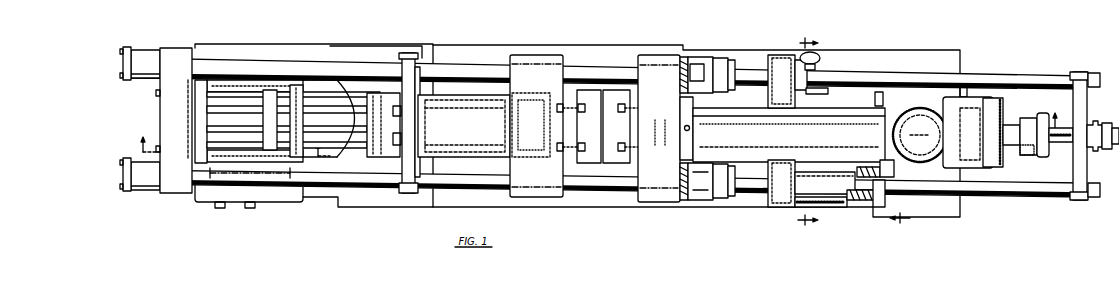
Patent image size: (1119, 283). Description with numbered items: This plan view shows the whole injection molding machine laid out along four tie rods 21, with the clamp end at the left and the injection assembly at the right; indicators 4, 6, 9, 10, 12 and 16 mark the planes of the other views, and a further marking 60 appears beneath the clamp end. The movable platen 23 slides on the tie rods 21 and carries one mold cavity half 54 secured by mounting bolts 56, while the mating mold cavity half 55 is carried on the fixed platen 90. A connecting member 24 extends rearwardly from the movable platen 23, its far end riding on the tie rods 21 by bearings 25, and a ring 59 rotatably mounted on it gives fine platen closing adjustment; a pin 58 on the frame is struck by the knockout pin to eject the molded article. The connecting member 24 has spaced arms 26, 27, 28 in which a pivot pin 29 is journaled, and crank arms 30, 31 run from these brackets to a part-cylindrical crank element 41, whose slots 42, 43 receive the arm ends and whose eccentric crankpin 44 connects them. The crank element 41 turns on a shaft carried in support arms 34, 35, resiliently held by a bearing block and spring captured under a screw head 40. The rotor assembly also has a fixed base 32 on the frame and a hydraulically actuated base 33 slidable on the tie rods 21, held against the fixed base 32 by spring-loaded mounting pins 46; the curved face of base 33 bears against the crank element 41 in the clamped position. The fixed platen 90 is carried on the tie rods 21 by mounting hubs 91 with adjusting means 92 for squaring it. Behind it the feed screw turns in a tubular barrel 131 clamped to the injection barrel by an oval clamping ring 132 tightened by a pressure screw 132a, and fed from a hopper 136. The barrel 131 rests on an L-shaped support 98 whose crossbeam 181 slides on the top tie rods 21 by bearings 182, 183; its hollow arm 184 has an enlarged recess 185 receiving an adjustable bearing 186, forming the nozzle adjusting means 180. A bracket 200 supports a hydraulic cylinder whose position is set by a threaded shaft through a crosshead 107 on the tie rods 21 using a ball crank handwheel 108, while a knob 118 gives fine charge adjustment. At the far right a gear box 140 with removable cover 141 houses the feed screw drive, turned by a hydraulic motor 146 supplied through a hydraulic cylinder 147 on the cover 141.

The section line 4- 4 is at (232, 150).
The section line 6 is at (244, 173).
The section line 9- 9 is at (988, 127).
The section line 10 is at (800, 135).
The section line 12 is at (906, 218).
The section line 16 is at (296, 173).
The tie rods 21 is at (440, 221).
The movable platen 23 is at (540, 198).
The connecting member 24 is at (607, 183).
The bearings 25 is at (407, 196).
The arm 26 is at (607, 73).
The arm 27 is at (367, 125).
The arm 28 is at (370, 158).
The pivot pin 29 is at (382, 158).
The crank arm 30 is at (336, 110).
The crank arm 31 is at (347, 146).
The fixed base 32 is at (185, 195).
The hydraulically actuated base 33 is at (197, 78).
The support arm 34 is at (255, 113).
The support arm 35 is at (197, 163).
The screw head 40 is at (313, 177).
The crank element 41 is at (207, 95).
The slot 42 is at (207, 108).
The slot 43 is at (210, 130).
The crankpin 44 is at (292, 121).
The mounting pins 46 is at (157, 96).
The mold cavity half 54 is at (592, 165).
The mold cavity half 55 is at (616, 165).
The mounting bolts 56 is at (584, 113).
The pin 58 is at (478, 123).
The ring 59 is at (492, 140).
The base slide 60 is at (220, 186).
The fixed platen 90 is at (656, 203).
The mounting hubs 91 is at (700, 221).
The adjusting means 92 is at (684, 202).
The support 98 is at (777, 209).
The crosshead 107 is at (1073, 199).
The ball crank handwheel 108 is at (1116, 208).
The knob 118 is at (821, 60).
The tubular barrel 131 is at (697, 147).
The clamping ring 132 is at (695, 107).
The pressure screw 132a is at (691, 128).
The hopper 136 is at (913, 108).
The gear box 140 is at (975, 97).
The removable cover 141 is at (1003, 110).
The hydraulic motor 146 is at (1045, 116).
The hydraulic cylinder 147 is at (1013, 150).
The adjusting means 180 is at (880, 209).
The crossbeam 181 is at (768, 93).
The bearing 182 is at (768, 170).
The bearing 183 is at (768, 58).
The arm 184 is at (843, 208).
The enlarged recess 185 is at (867, 208).
The adjustable bearing 186 is at (890, 175).
The bracket 200 is at (832, 155).